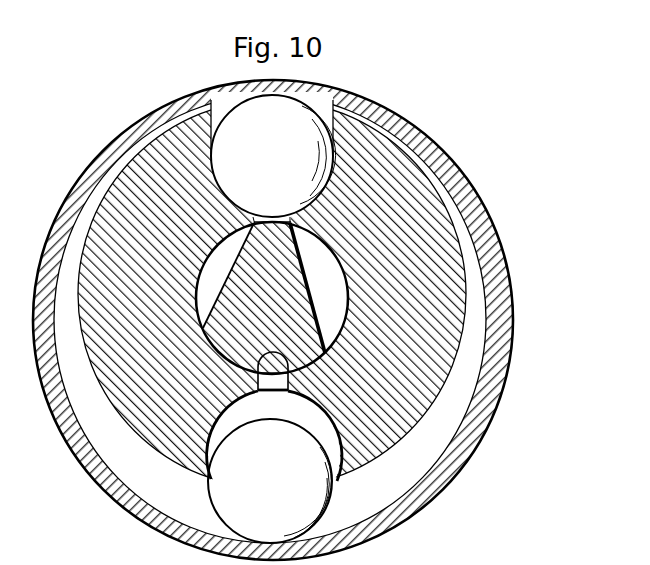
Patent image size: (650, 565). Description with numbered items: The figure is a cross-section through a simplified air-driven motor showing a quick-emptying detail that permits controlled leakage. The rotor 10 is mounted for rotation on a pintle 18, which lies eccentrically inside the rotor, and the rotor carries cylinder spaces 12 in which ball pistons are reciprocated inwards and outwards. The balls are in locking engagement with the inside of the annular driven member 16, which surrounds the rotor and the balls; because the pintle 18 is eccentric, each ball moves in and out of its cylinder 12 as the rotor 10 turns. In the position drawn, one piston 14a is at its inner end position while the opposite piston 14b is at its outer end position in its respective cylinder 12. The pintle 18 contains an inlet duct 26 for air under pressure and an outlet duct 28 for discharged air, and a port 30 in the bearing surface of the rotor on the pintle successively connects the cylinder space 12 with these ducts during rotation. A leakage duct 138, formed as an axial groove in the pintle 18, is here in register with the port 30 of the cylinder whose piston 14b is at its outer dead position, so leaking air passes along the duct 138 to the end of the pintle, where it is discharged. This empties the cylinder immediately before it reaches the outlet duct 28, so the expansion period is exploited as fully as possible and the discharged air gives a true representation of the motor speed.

The rotor 10 is at (402, 421).
The cylinder space 12 is at (274, 435).
The piston 14a is at (273, 156).
The piston 14b is at (270, 481).
The driven member 16 is at (480, 409).
The pintle 18 is at (293, 306).
The inlet duct 26 is at (238, 252).
The outlet duct 28 is at (308, 250).
The port 30 is at (280, 366).
The leakage duct 138 is at (290, 366).